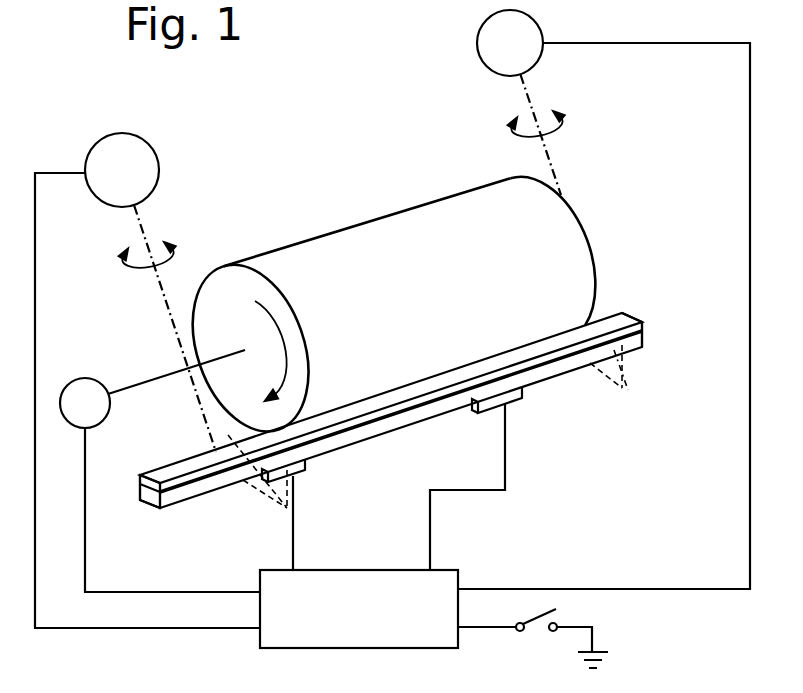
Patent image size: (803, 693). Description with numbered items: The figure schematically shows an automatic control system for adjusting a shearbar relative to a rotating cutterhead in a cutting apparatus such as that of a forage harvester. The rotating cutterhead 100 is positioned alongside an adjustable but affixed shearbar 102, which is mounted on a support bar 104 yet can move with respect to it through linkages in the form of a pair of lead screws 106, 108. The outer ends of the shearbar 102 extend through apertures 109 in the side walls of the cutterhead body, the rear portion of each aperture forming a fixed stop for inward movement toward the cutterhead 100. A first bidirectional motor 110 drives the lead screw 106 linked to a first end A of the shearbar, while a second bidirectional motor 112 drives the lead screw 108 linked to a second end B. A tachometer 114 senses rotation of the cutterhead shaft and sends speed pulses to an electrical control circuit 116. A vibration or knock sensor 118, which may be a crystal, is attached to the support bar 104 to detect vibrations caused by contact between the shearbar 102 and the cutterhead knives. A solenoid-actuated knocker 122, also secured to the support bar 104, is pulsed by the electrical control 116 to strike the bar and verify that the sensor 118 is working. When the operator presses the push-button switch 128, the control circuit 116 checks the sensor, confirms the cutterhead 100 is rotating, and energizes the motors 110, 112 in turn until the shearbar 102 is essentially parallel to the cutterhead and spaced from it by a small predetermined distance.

The cutterhead 100 is at (385, 216).
The shearbar 102 is at (628, 314).
The support bar 104 is at (385, 433).
The lead screw 106 is at (165, 302).
The lead screw 108 is at (525, 90).
The apertures 109 is at (277, 490).
The first bidirectional motor 110 is at (98, 140).
The second bidirectional motor 112 is at (477, 50).
The tachometer 114 is at (70, 379).
The electrical control circuit 116 is at (458, 570).
The vibration or knock sensor 118 is at (307, 470).
The solenoid-actuated knocker 122 is at (510, 408).
The push-button switch 128 is at (535, 618).
The first end of the shearbar A is at (165, 478).
The second end of the shearbar B is at (593, 313).